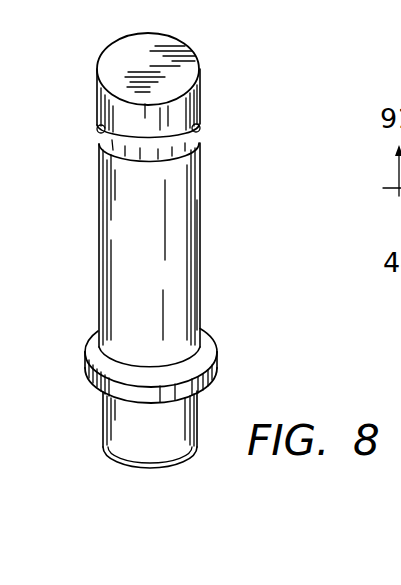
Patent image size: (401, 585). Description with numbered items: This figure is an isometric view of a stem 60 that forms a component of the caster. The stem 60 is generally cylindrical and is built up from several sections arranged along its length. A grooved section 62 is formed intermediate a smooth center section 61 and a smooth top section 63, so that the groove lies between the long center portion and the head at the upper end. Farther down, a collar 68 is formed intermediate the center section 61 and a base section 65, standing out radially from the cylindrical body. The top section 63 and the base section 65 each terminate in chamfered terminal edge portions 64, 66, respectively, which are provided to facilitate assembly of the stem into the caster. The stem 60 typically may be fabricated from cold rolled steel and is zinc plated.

The stem 60 is at (218, 198).
The center section 61 is at (130, 226).
The grooved section 62 is at (107, 148).
The top section 63 is at (108, 100).
The chamfered terminal edge portion 64 is at (116, 46).
The base section 65 is at (118, 418).
The chamfered terminal edge portion 66 is at (125, 461).
The collar 68 is at (88, 355).